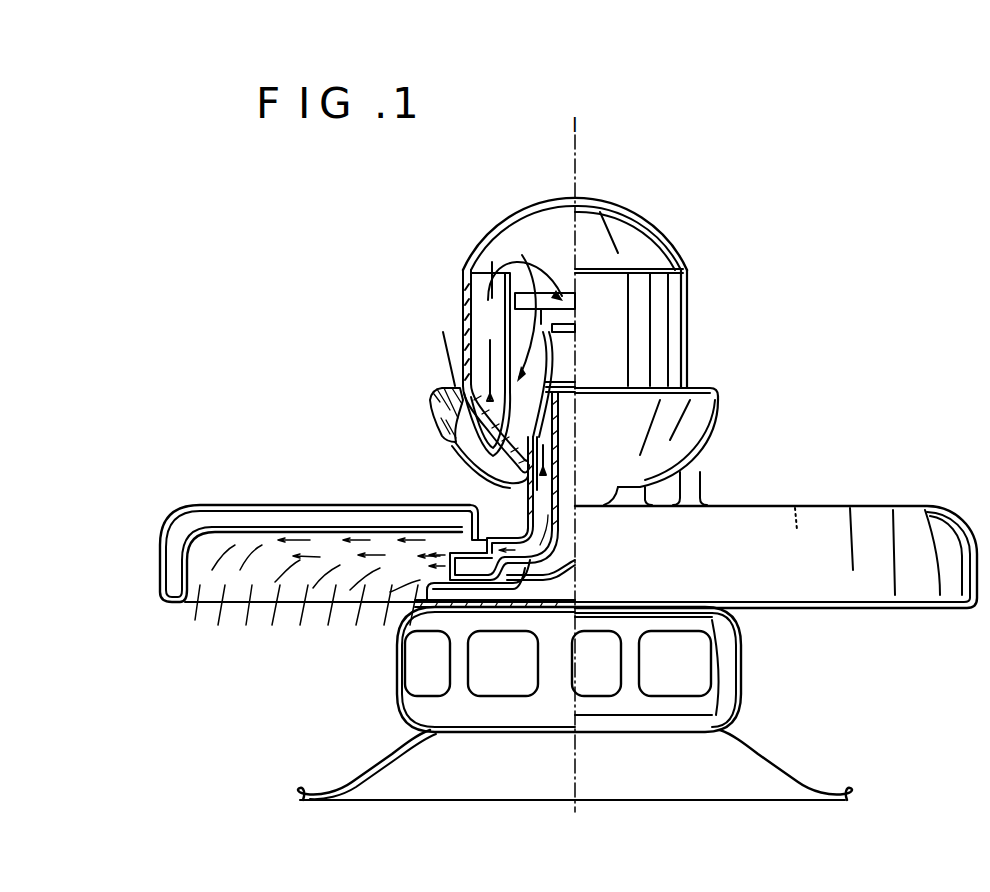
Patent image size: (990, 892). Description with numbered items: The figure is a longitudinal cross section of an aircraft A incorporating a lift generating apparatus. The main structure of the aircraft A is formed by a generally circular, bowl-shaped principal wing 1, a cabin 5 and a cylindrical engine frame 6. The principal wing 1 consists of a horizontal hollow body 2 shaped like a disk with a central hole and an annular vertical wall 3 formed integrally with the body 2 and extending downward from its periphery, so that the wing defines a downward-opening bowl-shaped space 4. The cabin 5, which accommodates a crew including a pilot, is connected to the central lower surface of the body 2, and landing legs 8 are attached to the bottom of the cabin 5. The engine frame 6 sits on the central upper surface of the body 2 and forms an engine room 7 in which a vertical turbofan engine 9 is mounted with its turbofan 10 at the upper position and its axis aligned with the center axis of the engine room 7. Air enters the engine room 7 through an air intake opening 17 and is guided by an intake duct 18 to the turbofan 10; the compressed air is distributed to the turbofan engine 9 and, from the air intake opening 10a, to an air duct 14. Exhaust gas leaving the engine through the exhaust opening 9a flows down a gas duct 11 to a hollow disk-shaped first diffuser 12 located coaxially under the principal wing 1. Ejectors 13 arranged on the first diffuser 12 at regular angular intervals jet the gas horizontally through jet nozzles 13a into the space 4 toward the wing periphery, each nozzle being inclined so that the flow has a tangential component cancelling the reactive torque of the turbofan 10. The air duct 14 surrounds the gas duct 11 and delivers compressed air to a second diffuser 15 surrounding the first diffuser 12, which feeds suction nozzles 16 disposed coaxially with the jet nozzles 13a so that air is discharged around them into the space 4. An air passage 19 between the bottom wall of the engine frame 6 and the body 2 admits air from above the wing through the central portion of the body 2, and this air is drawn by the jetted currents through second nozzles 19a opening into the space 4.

The principal wing 1 is at (770, 505).
The horizontal hollow body 2 is at (333, 504).
The annular vertical wall 3 is at (158, 568).
The space 4 is at (272, 557).
The cabin 5 is at (728, 672).
The engine frame 6 is at (662, 258).
The engine room 7 is at (561, 241).
The landing legs 8 is at (776, 765).
The turbofan engine 9 is at (560, 350).
The exhaust opening 9a is at (562, 398).
The turbofan 10 is at (548, 304).
The air intake opening 10a is at (512, 326).
The gas duct 11 is at (563, 483).
The first diffuser 12 is at (527, 606).
The ejectors 13 is at (493, 590).
The jet nozzles 13a is at (482, 590).
The air duct 14 is at (556, 420).
The second diffuser 15 is at (561, 548).
The suction nozzles 16 is at (446, 572).
The air intake opening 17 is at (452, 390).
The intake duct 18 is at (457, 455).
The air passage 19 is at (512, 518).
The second nozzles 19a is at (452, 512).
The aircraft A is at (638, 208).